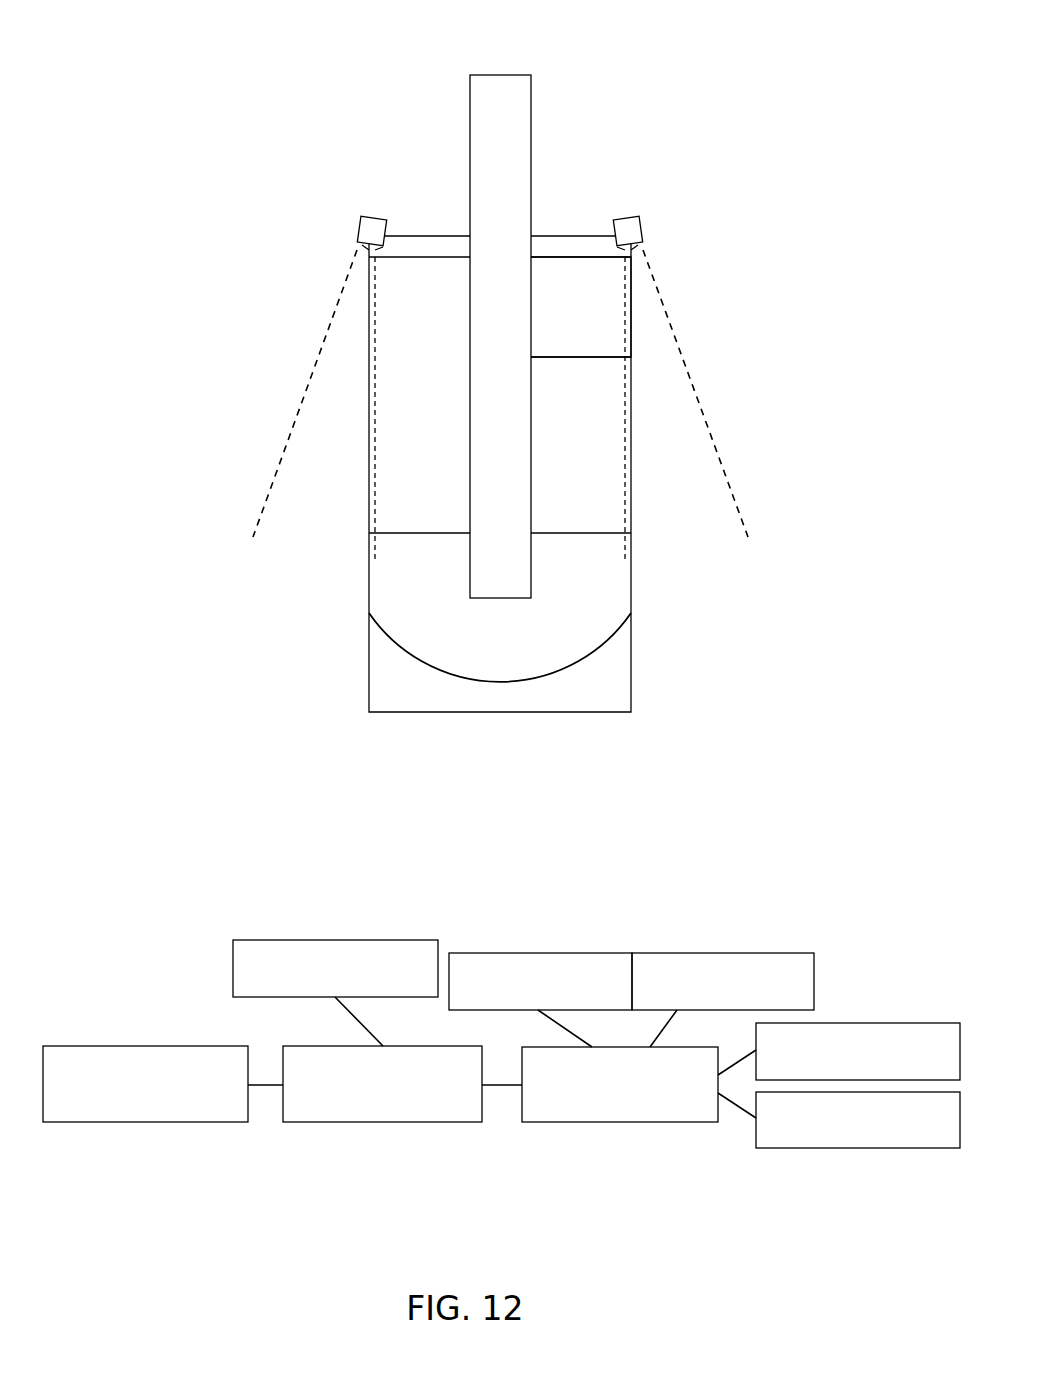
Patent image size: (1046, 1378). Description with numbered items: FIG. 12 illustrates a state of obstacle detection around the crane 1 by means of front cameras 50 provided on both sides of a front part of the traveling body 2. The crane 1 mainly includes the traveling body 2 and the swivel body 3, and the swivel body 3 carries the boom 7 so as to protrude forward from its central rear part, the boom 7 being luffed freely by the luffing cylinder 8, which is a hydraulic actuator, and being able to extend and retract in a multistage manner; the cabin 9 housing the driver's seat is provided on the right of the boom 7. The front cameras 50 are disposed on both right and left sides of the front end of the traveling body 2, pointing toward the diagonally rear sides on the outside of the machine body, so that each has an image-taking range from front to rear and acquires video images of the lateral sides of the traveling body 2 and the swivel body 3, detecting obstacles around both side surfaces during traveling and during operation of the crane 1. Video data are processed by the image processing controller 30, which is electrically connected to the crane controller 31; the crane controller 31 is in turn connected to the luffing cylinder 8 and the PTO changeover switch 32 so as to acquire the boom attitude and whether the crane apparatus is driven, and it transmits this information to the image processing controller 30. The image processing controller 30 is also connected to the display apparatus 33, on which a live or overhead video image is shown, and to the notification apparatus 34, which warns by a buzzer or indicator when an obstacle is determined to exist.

The crane 1 is at (212, 123).
The traveling body 2 is at (386, 208).
The swivel body 3 is at (390, 658).
The boom 7 is at (507, 83).
The luffing cylinder 8 is at (330, 940).
The cabin 9 is at (573, 363).
The image processing controller 30 is at (621, 1122).
The crane controller 31 is at (372, 1122).
The PTO changeover switch 32 is at (113, 1046).
The display apparatus 33 is at (865, 1022).
The notification apparatus 34 is at (858, 1148).
The front camera 50 is at (360, 226).